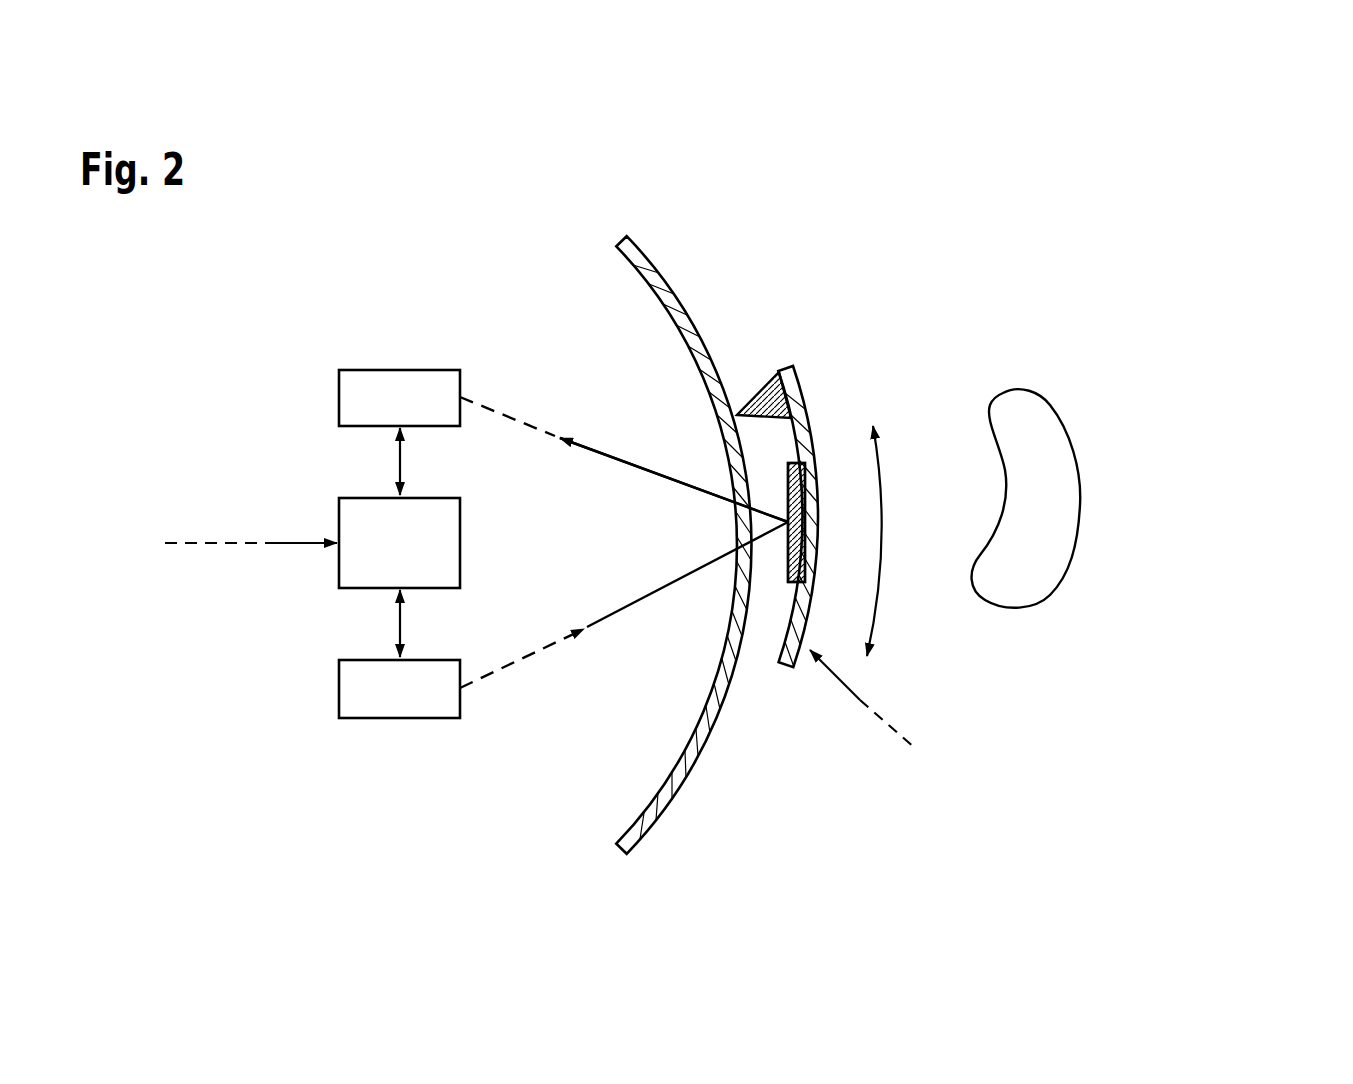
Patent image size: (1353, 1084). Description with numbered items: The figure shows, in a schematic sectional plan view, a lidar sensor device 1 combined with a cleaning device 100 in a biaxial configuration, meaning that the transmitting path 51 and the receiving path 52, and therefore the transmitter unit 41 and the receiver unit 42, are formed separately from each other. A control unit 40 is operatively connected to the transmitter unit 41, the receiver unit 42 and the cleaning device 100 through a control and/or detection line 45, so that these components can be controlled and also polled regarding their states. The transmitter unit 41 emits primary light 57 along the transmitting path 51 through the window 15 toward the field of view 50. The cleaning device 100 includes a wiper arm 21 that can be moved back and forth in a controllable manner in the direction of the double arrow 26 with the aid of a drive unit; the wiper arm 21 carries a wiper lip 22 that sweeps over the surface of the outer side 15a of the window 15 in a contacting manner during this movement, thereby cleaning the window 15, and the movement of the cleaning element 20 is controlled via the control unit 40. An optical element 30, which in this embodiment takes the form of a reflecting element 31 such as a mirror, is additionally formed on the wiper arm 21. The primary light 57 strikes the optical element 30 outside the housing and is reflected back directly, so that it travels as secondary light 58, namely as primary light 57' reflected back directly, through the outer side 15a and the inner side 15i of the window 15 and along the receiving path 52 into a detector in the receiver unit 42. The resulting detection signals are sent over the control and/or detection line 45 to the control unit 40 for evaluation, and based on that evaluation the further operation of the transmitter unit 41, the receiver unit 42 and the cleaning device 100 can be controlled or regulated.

The lidar sensor device 1 is at (1250, 201).
The cleaning device 100 is at (1092, 286).
The window 15 is at (622, 236).
The outer side of window 15a is at (651, 258).
The inner side of window 15i is at (637, 273).
The cleaning element 20 is at (829, 360).
The wiper arm 21 is at (808, 403).
The wiper lip 22 is at (763, 390).
The double arrow 26 is at (883, 492).
The optical element 30 is at (788, 578).
The reflecting element 31 is at (761, 715).
The control unit 40 is at (462, 543).
The transmitter unit 41 is at (395, 700).
The receiver unit 42 is at (395, 385).
The control and/or detection line 45 is at (287, 540).
The field of view 50 is at (1020, 406).
The transmitting path 51 is at (502, 667).
The receiving path 52 is at (505, 412).
The primary light 57 is at (687, 604).
The primary light reflected back directly 57' is at (674, 463).
The secondary light 58 is at (598, 446).